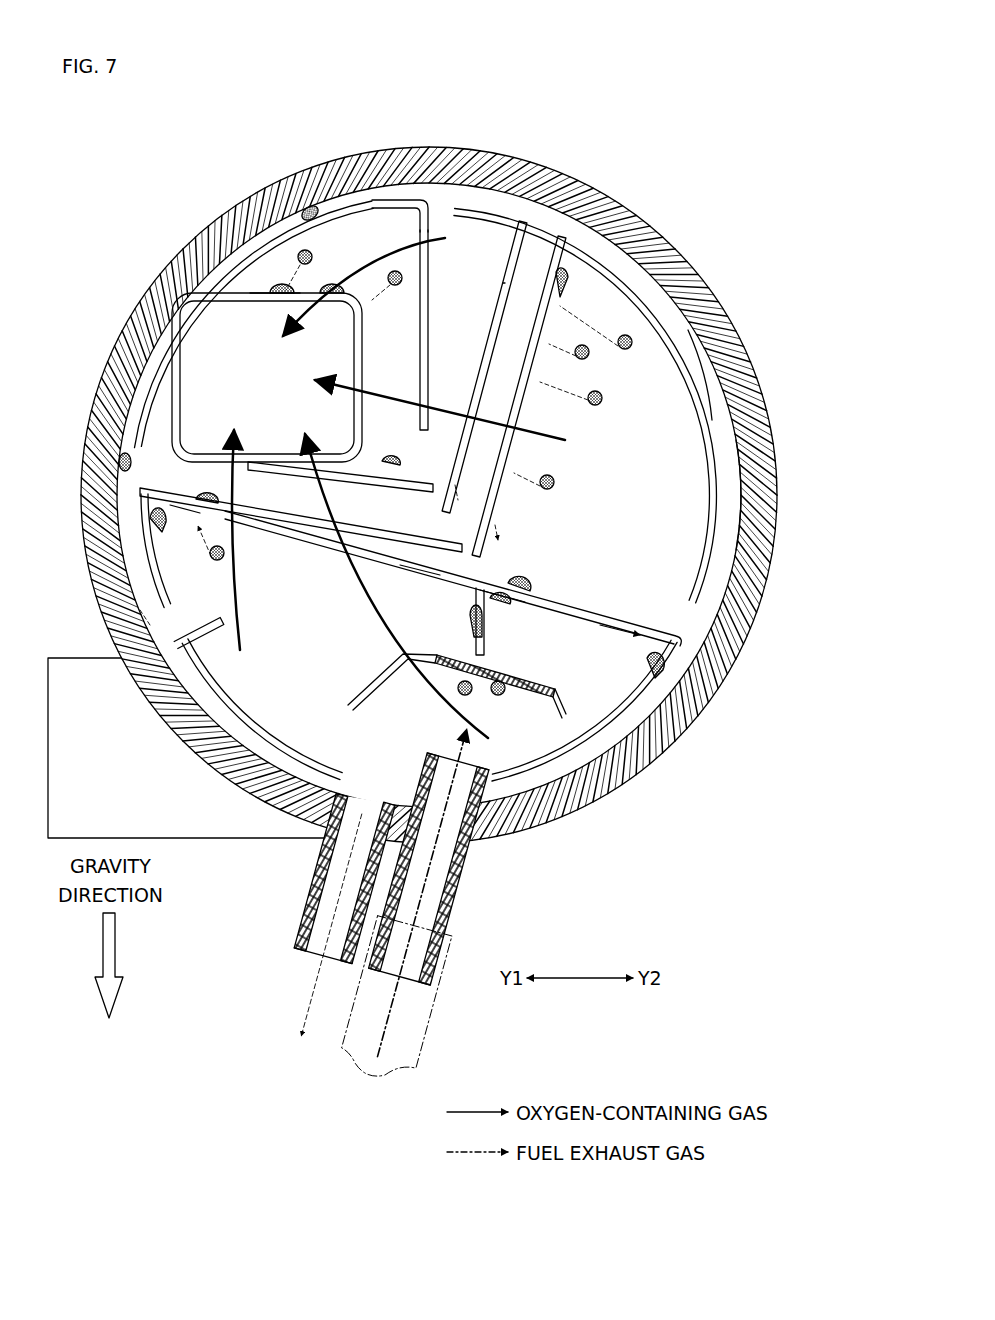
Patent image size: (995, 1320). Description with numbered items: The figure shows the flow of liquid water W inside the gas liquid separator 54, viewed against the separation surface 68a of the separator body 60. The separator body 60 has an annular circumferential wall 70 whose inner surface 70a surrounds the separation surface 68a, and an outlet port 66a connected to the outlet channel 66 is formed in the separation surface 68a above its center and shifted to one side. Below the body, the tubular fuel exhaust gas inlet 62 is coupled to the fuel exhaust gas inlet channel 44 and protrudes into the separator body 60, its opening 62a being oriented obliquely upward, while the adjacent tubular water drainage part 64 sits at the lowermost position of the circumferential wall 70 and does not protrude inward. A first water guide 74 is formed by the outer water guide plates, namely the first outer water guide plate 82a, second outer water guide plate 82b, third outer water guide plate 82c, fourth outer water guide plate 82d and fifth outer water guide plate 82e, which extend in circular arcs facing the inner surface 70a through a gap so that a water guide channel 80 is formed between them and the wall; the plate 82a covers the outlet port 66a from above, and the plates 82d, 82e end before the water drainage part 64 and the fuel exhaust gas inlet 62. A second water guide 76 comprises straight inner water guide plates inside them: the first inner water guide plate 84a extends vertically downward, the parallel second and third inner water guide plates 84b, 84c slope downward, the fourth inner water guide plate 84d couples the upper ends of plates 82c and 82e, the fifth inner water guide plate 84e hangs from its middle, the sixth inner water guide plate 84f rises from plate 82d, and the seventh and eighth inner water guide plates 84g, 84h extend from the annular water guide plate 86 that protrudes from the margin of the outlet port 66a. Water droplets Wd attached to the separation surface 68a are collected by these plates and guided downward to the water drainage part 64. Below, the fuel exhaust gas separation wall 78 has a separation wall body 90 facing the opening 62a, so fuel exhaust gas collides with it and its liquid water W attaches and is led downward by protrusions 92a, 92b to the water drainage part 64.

The gas liquid separator 54 is at (153, 140).
The separator body 60 is at (630, 208).
The fuel exhaust gas inlet 62 is at (446, 884).
The opening 62a is at (440, 752).
The water drainage part 64 is at (302, 915).
The outlet channel 66 is at (212, 838).
The outlet port 66a is at (215, 390).
The separation surface 68a is at (645, 338).
The circumferential wall 70 is at (688, 276).
The inner surface 70a is at (738, 497).
The first water guide 74 is at (374, 198).
The second water guide 76 is at (503, 283).
The fuel exhaust gas separation wall 78 is at (558, 690).
The water guide channel 80 is at (708, 372).
The first outer water guide plate 82a is at (172, 338).
The second outer water guide plate 82b is at (713, 425).
The third outer water guide plate 82c is at (150, 606).
The fourth outer water guide plate 82d is at (300, 758).
The fifth outer water guide plate 82e is at (601, 732).
The first inner water guide plate 84a is at (437, 210).
The second inner water guide plate 84b is at (500, 232).
The third inner water guide plate 84c is at (543, 297).
The fourth inner water guide plate 84d is at (325, 548).
The fifth inner water guide plate 84e is at (485, 630).
The sixth inner water guide plate 84f is at (205, 630).
The seventh inner water guide plate 84g is at (330, 437).
The eighth inner water guide plate 84h is at (273, 492).
The annular water guide plate 86 is at (267, 300).
The separation wall body 90 is at (445, 660).
The protrusion 92a is at (372, 694).
The protrusion 92b is at (563, 720).
The fuel exhaust gas inlet channel 44 is at (432, 1012).
The liquid water W is at (312, 205).
The water droplets Wd is at (397, 286).